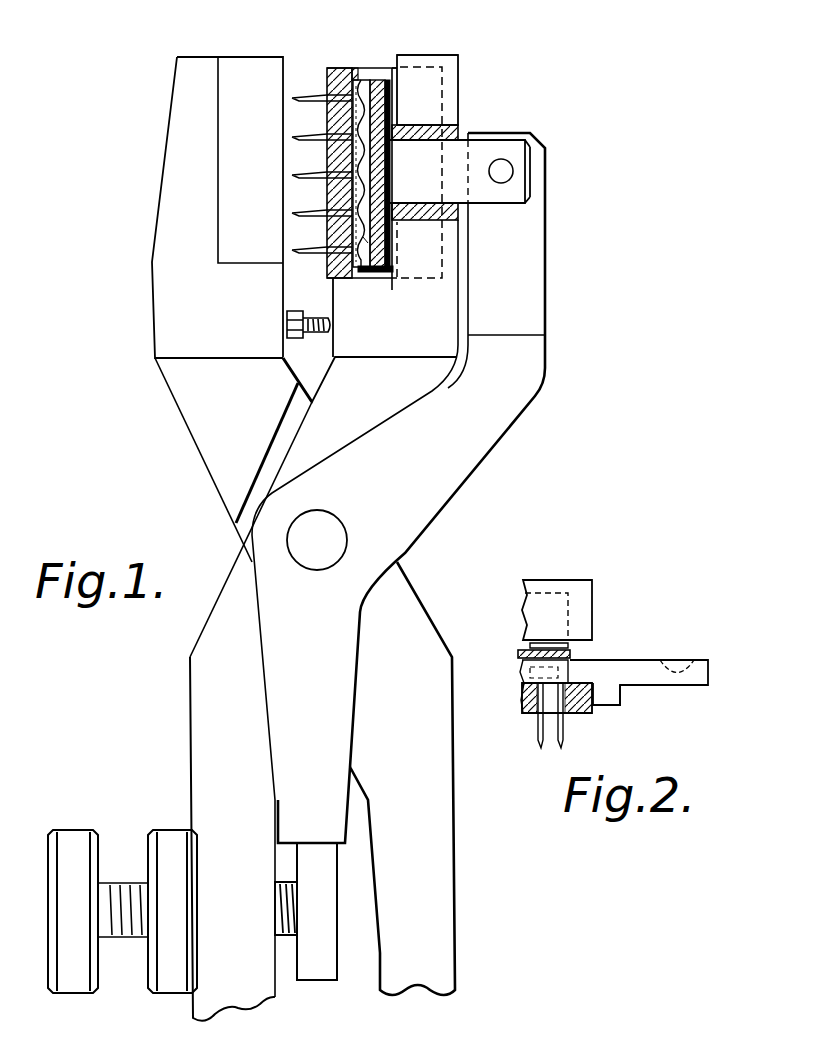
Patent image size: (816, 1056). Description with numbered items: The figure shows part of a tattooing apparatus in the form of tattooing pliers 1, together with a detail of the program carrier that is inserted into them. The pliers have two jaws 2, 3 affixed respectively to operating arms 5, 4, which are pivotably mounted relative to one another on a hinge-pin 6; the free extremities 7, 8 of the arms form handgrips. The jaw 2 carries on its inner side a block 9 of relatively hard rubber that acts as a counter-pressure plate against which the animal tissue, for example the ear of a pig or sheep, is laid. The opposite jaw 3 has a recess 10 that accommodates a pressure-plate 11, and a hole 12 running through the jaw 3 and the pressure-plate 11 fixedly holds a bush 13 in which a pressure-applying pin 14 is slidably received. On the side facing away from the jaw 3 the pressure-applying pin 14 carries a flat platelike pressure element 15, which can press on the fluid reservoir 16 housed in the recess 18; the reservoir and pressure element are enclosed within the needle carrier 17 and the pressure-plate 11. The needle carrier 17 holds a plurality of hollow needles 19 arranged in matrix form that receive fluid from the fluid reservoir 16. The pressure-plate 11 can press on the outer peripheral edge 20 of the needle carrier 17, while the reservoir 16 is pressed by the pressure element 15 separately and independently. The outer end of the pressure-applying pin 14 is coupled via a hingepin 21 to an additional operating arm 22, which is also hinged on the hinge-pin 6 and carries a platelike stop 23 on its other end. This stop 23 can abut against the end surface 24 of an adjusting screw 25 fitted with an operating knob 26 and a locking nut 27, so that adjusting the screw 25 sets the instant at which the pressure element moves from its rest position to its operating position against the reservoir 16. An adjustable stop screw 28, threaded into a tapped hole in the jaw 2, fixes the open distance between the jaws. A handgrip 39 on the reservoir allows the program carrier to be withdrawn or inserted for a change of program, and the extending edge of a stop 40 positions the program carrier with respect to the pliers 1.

In FIG. 1, the pliers 1 is at (186, 428).
In FIG. 1, the jaw 2 is at (178, 152).
In FIG. 1, the jaw 3 is at (455, 83).
In FIG. 2, the jaw 3 is at (590, 587).
In FIG. 1, the operating arm 4 is at (443, 348).
In FIG. 1, the operating arm 5 is at (178, 383).
In FIG. 1, the hinge-pin 6 is at (317, 540).
In FIG. 1, the free extremity 7 is at (200, 673).
In FIG. 1, the free extremity 8 is at (443, 686).
In FIG. 1, the block 9 is at (230, 82).
In FIG. 1, the recess 10 is at (457, 62).
In FIG. 1, the pressure-plate 11 is at (433, 102).
In FIG. 2, the pressure-plate 11 is at (535, 643).
In FIG. 1, the hole 12 is at (457, 126).
In FIG. 1, the bush 13 is at (460, 133).
In FIG. 1, the pressure-applying pin 14 is at (522, 153).
In FIG. 1, the pressure element 15 is at (378, 80).
In FIG. 1, the fluid reservoir 16 is at (363, 240).
In FIG. 2, the fluid reservoir 16 is at (568, 672).
In FIG. 1, the needle carrier 17 is at (337, 67).
In FIG. 2, the needle carrier 17 is at (570, 653).
In FIG. 1, the recess 18 is at (392, 266).
In FIG. 1, the hollow needles 19 is at (308, 93).
In FIG. 2, the hollow needles 19 is at (538, 732).
In FIG. 1, the outer peripheral edge 20 is at (358, 80).
In FIG. 1, the hingepin 21 is at (502, 172).
In FIG. 1, the additional operating arm 22 is at (545, 315).
In FIG. 1, the platelike stop 23 is at (327, 958).
In FIG. 1, the end surface 24 is at (297, 908).
In FIG. 1, the adjusting screw 25 is at (277, 937).
In FIG. 1, the operating knob 26 is at (67, 835).
In FIG. 1, the locking nut 27 is at (168, 833).
In FIG. 1, the adjustable stop screw 28 is at (313, 318).
In FIG. 2, the handgrip 39 is at (680, 677).
In FIG. 2, the stop 40 is at (613, 707).